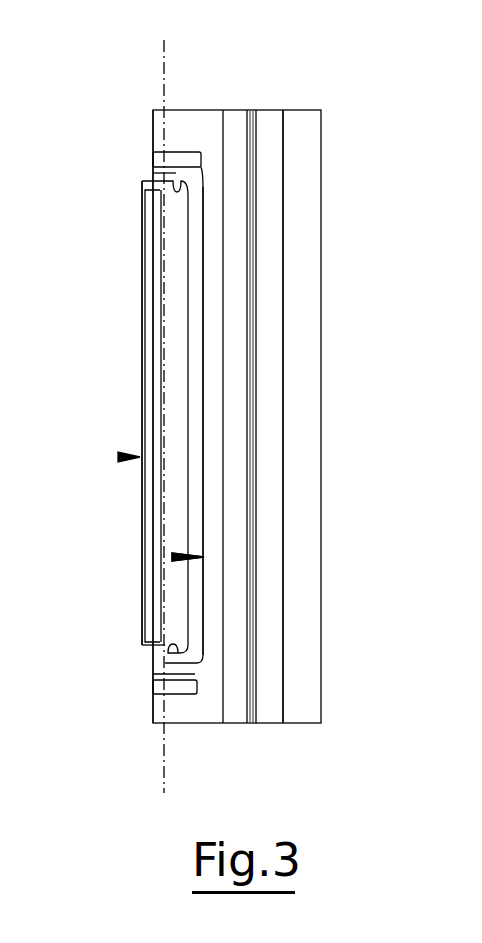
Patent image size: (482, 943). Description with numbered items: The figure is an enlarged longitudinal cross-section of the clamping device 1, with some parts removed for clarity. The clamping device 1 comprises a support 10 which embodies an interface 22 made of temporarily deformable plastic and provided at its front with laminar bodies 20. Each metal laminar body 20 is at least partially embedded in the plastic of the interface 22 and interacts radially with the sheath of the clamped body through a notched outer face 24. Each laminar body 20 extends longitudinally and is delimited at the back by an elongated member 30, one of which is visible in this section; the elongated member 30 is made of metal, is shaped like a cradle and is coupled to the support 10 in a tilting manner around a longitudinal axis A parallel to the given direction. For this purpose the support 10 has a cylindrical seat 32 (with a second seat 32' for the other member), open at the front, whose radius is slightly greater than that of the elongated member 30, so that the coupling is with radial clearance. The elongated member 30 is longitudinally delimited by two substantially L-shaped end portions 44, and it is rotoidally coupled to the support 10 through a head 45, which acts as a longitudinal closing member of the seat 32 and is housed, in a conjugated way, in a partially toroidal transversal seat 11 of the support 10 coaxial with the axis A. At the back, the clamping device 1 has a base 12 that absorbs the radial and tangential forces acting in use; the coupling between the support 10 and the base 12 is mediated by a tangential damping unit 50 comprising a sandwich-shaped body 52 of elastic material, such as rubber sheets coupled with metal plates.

The clamping device 1 is at (410, 104).
The support 10 is at (160, 137).
The transversal seat 11 is at (185, 120).
The base 12 is at (312, 130).
The laminar body 20 is at (142, 325).
The interface 22 is at (170, 355).
The notched outer face 24 is at (118, 457).
The elongated member 30 is at (313, 411).
The cylindrical seat 32 is at (112, 573).
The cylindrical seat 32' is at (188, 557).
The end portion 44 is at (153, 175).
The head 45 is at (153, 158).
The damping unit 50 is at (283, 383).
The sandwich-shaped body 52 is at (255, 494).
The longitudinal axis A is at (160, 745).